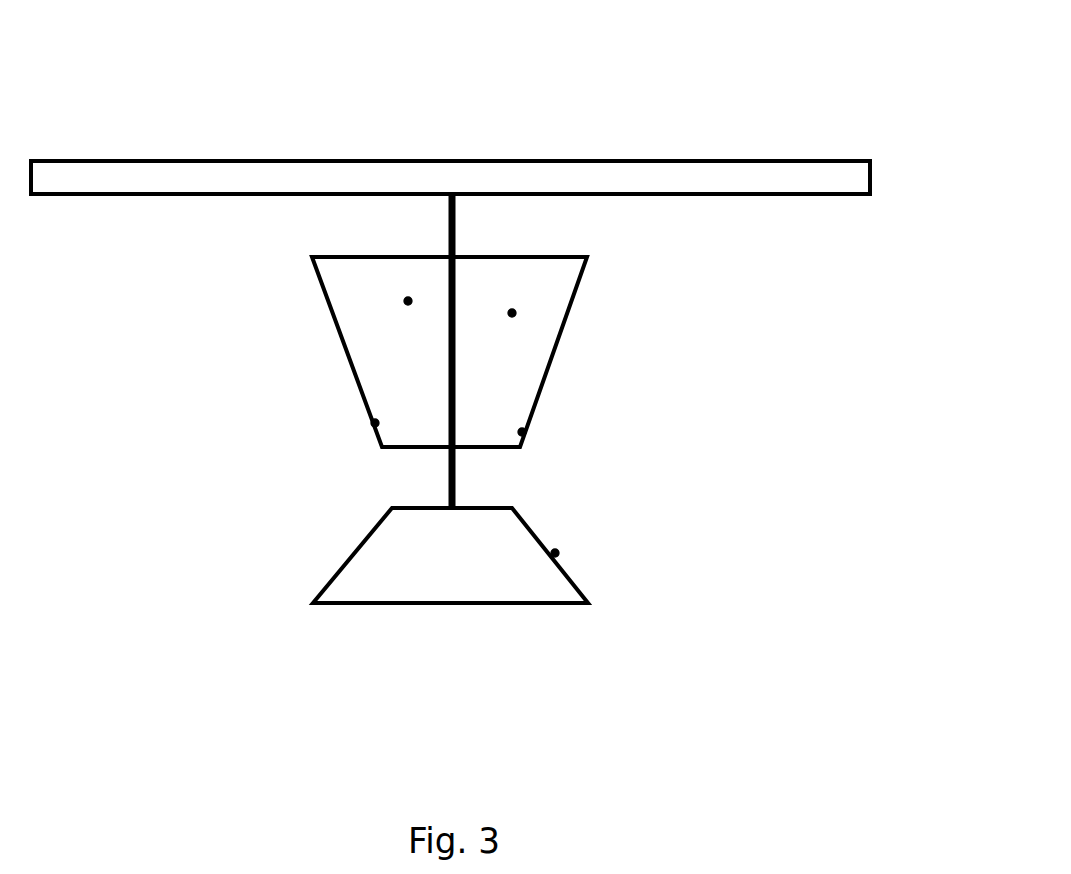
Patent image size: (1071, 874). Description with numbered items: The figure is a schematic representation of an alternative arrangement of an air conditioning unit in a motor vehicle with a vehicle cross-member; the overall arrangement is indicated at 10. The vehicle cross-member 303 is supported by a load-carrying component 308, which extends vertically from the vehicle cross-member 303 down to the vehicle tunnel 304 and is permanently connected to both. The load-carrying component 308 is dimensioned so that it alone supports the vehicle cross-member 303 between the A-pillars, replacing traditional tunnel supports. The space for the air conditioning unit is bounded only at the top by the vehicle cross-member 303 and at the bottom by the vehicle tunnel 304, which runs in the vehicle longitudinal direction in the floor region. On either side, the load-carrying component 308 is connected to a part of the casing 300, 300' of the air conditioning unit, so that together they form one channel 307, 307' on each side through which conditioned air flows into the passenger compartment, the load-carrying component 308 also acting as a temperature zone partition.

The vibration device 10 is at (443, 255).
The vehicle cross-member 303 is at (602, 163).
The load-carrying component 308 is at (455, 218).
The channel 307 is at (645, 337).
The channel 307' is at (222, 328).
The casing 300 is at (683, 459).
The casing 300' is at (207, 436).
The vehicle tunnel 304 is at (555, 553).